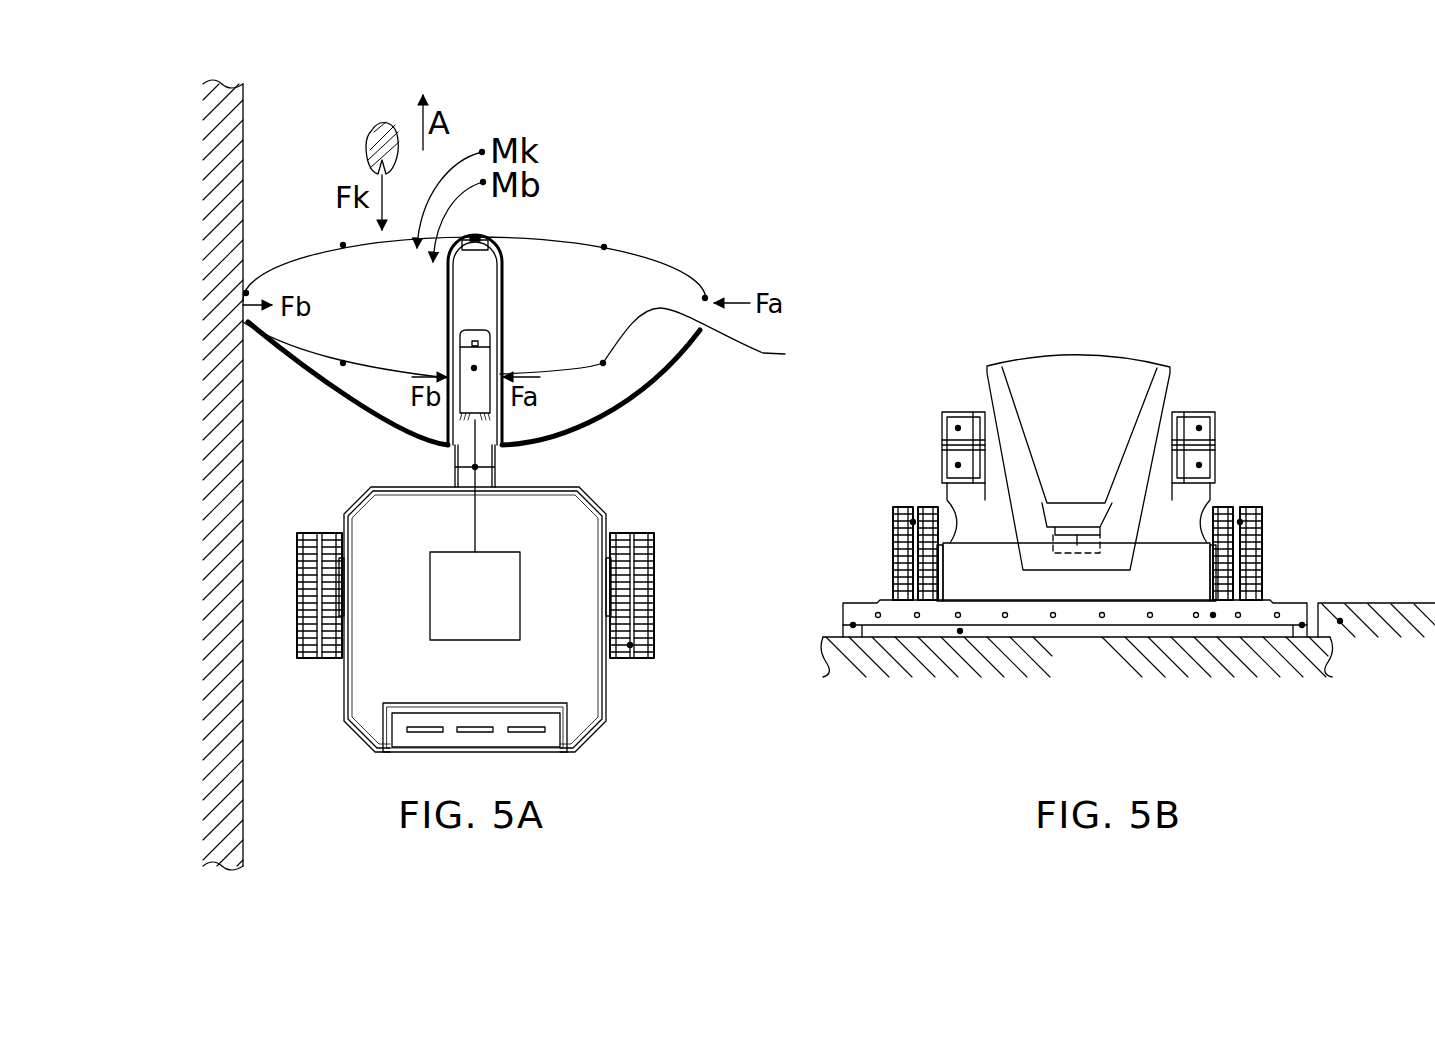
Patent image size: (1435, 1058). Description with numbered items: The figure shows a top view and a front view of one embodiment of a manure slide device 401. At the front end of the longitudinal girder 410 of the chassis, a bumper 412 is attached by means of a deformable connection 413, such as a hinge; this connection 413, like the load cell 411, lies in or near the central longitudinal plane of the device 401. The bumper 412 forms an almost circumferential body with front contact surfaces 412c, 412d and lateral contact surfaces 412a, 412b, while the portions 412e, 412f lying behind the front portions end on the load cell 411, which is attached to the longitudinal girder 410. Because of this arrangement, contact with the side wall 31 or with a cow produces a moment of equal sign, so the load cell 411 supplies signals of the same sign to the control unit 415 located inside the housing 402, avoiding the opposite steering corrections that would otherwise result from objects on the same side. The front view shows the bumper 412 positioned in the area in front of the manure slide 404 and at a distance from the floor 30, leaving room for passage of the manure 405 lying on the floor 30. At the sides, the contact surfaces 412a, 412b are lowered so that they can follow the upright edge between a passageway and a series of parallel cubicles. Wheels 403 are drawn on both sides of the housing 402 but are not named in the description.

In FIG. 5B, the floor 30 is at (1102, 672).
In FIG. 5A, the side wall 31 is at (245, 418).
In FIG. 5B, the side wall 31 is at (1340, 621).
In FIG. 5A, the device 401 is at (479, 491).
In FIG. 5B, the device 401 is at (1062, 458).
In FIG. 5A, the housing 402 is at (475, 619).
In FIG. 5B, the housing 402 is at (1113, 418).
In FIG. 5A, the wheel 403 is at (630, 645).
In FIG. 5B, the wheel 403 is at (913, 522).
In FIG. 5A, the manure slide 404 is at (560, 433).
In FIG. 5B, the manure 405 is at (960, 631).
In FIG. 5A, the longitudinal girder 410 is at (475, 467).
In FIG. 5A, the load cell 411 is at (474, 368).
In FIG. 5B, the bumper 412 is at (1213, 615).
In FIG. 5A, the lateral contact surface 412a is at (705, 298).
In FIG. 5B, the lateral contact surface 412a is at (853, 625).
In FIG. 5A, the lateral contact surface 412b is at (246, 293).
In FIG. 5B, the lateral contact surface 412b is at (1302, 625).
In FIG. 5A, the front contact surface 412c is at (604, 247).
In FIG. 5A, the front contact surface 412d is at (343, 245).
In FIG. 5A, the bumper portion 412e is at (726, 357).
In FIG. 5A, the bumper portion 412f is at (243, 328).
In FIG. 5A, the deformable connection 413 is at (476, 236).
In FIG. 5A, the control unit 415 is at (513, 613).